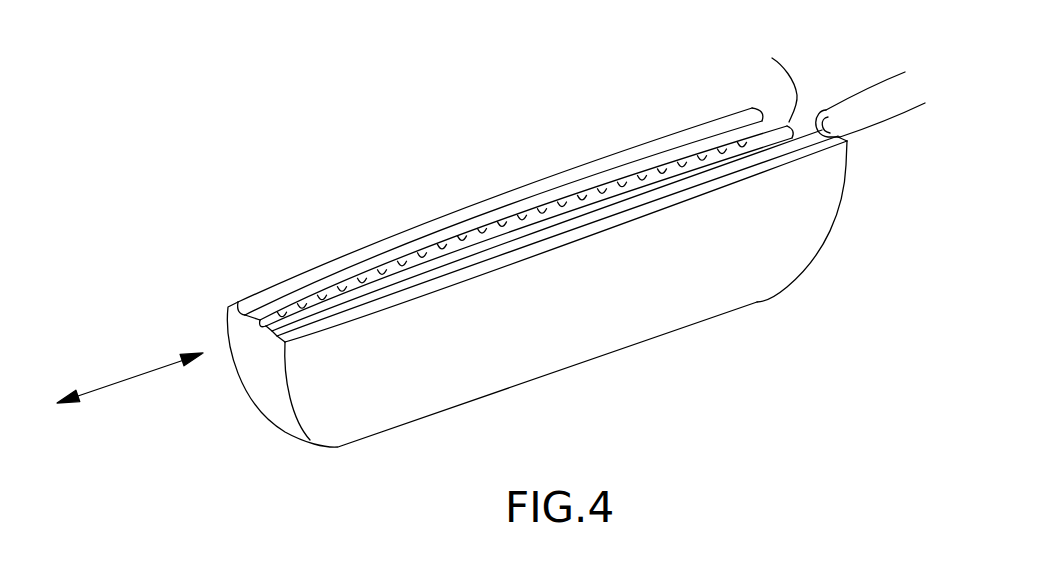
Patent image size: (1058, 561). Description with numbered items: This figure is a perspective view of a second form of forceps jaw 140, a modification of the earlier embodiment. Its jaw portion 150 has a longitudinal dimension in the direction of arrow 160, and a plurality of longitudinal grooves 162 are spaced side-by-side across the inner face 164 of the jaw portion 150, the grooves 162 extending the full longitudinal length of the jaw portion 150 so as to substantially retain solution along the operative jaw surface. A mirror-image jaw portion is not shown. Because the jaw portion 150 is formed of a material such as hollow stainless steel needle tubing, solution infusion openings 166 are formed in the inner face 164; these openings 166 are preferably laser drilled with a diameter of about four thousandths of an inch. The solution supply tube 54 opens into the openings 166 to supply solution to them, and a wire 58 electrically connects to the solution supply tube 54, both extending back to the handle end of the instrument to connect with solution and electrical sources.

The solution supply tube 54 is at (880, 108).
The wire 58 is at (791, 64).
The jaw 140 is at (440, 415).
The jaw portion 150 is at (678, 302).
The arrow 160 is at (138, 375).
The longitudinal grooves 162 is at (456, 234).
The inner face 164 is at (290, 290).
The solution infusion openings 166 is at (605, 158).